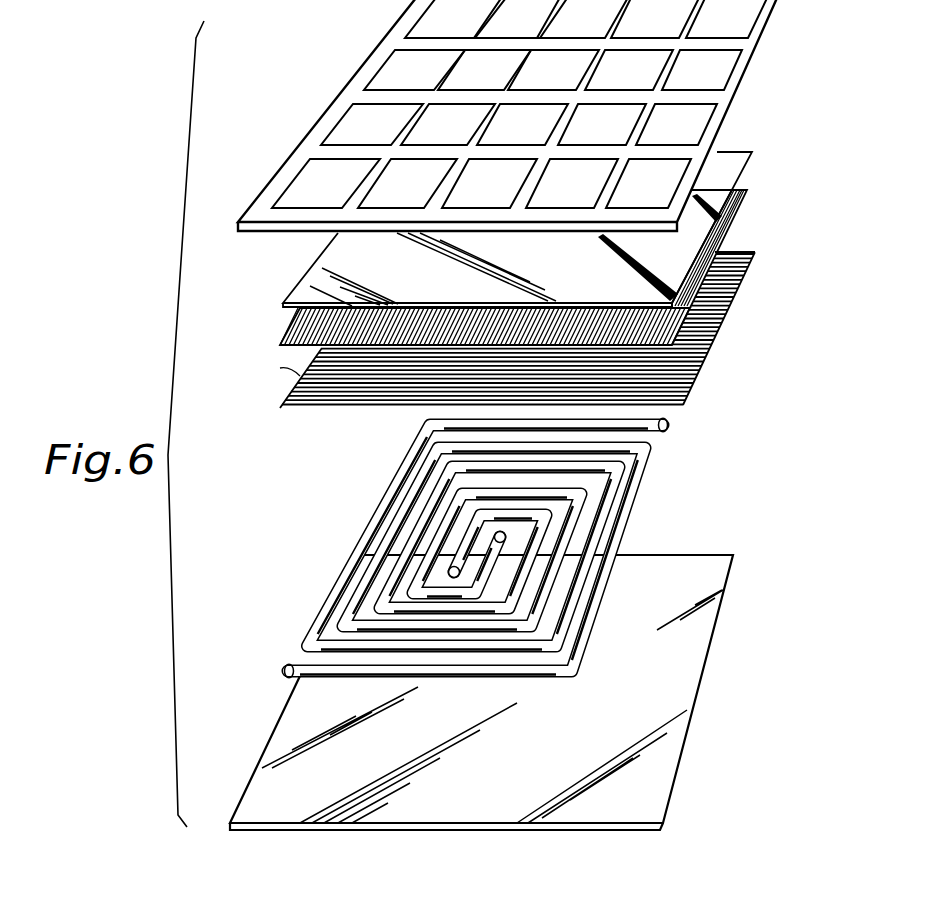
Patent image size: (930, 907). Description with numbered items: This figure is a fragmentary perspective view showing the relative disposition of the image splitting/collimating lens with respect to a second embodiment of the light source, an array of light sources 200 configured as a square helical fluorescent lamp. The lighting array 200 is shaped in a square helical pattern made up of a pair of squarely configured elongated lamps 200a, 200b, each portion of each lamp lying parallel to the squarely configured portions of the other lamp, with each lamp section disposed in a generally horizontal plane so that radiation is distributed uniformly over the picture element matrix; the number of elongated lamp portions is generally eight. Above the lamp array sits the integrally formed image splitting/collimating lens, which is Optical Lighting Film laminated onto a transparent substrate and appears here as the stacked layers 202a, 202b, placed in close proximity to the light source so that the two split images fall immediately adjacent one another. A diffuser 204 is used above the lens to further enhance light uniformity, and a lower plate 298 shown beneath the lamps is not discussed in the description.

The diffuser 204 is at (278, 186).
The upper plate of thermal module 202a is at (320, 272).
The lower laminated plate of thermal module 202b is at (300, 324).
The array of light sources 200 is at (522, 548).
The squarely configured elongated lamp 200a is at (394, 481).
The squarely configured elongated lamp 200b is at (640, 478).
The base plate 298 is at (283, 777).